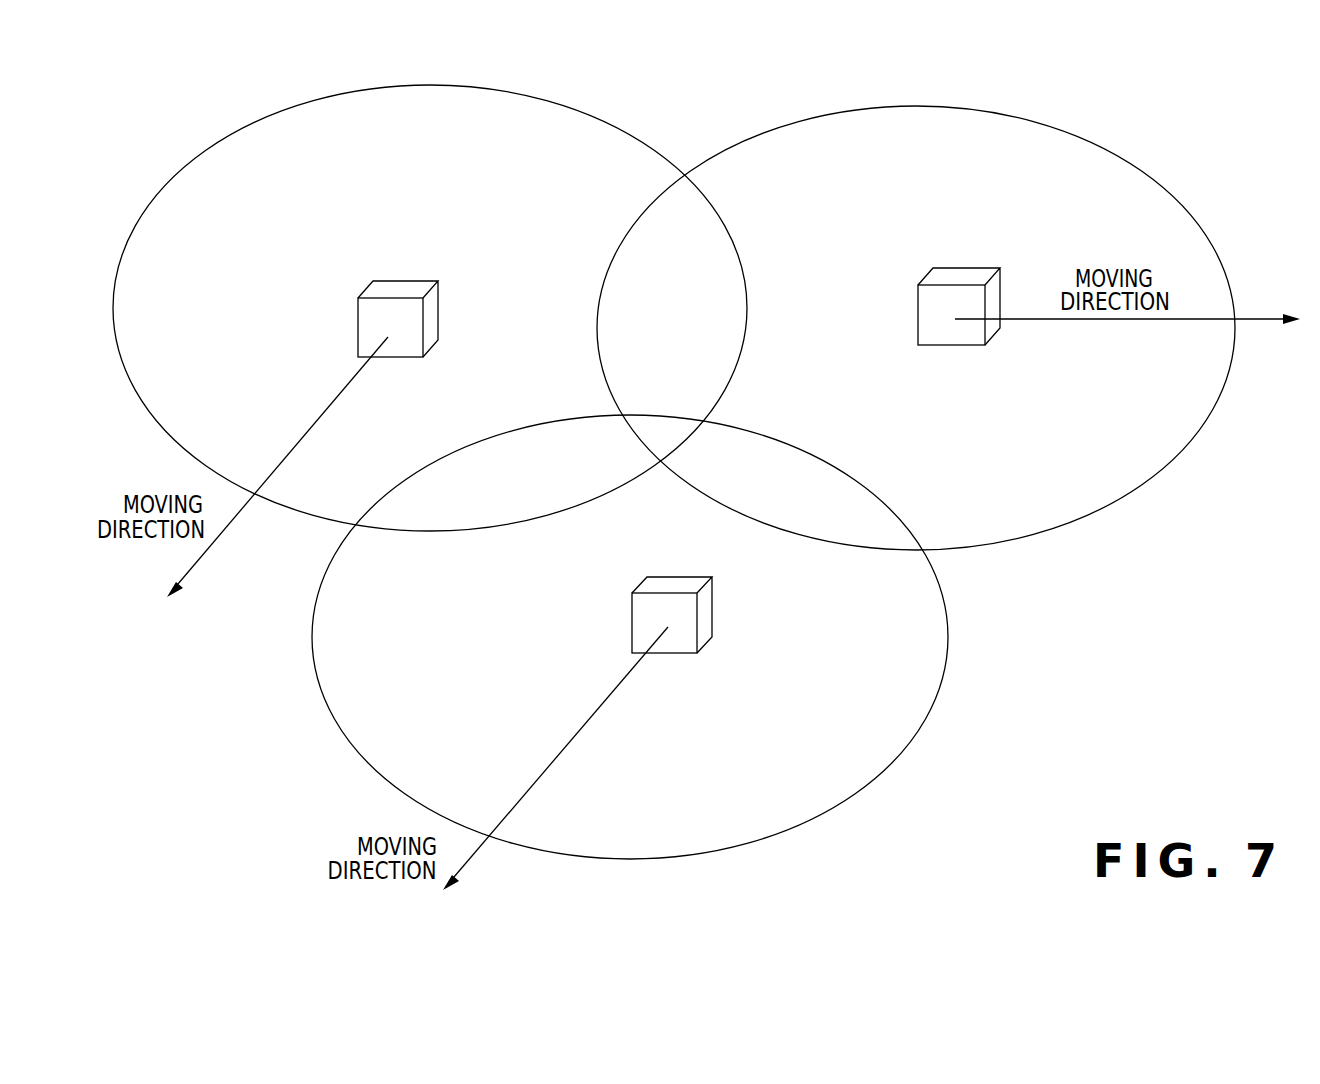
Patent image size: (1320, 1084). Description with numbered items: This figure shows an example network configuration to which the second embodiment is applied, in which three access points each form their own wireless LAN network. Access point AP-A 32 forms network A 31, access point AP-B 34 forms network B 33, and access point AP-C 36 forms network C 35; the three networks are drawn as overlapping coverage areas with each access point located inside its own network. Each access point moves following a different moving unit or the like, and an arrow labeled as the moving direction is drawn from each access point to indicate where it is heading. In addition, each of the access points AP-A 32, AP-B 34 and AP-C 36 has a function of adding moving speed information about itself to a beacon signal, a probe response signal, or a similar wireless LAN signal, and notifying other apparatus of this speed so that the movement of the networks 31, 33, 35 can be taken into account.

The network A 31 is at (232, 130).
The access point AP-A 32 is at (358, 311).
The network B 33 is at (1053, 531).
The access point AP-B 34 is at (918, 297).
The network C 35 is at (770, 840).
The access point AP-C 36 is at (632, 606).